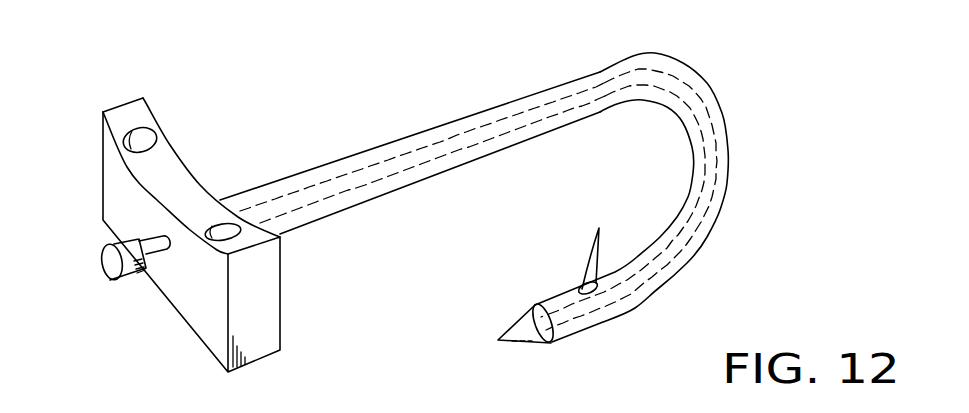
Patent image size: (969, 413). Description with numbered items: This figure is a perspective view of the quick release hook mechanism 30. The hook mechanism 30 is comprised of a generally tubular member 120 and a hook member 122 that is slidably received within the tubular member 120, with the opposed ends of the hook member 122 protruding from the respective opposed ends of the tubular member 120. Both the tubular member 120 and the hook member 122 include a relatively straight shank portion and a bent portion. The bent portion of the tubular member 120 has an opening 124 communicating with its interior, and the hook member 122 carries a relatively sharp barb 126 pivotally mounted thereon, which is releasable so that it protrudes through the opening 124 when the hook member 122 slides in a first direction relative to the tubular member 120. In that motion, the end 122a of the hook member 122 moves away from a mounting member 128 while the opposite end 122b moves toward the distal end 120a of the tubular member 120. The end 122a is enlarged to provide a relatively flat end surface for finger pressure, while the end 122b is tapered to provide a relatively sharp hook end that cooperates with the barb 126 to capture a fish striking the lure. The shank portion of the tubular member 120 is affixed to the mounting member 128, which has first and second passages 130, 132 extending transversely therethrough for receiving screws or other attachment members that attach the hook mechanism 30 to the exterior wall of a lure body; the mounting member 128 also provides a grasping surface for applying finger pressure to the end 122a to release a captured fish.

The hook mechanism 30 is at (403, 90).
The tubular member 120 is at (606, 63).
The distal end of tubular member 120a is at (552, 343).
The hook member 122 is at (700, 207).
The end of hook member 122a is at (108, 266).
The pointed end of hook member 122b is at (527, 333).
The opening 124 is at (578, 291).
The barb 126 is at (591, 262).
The mounting member 128 is at (184, 187).
The first passage 130 is at (151, 142).
The second passage 132 is at (211, 237).